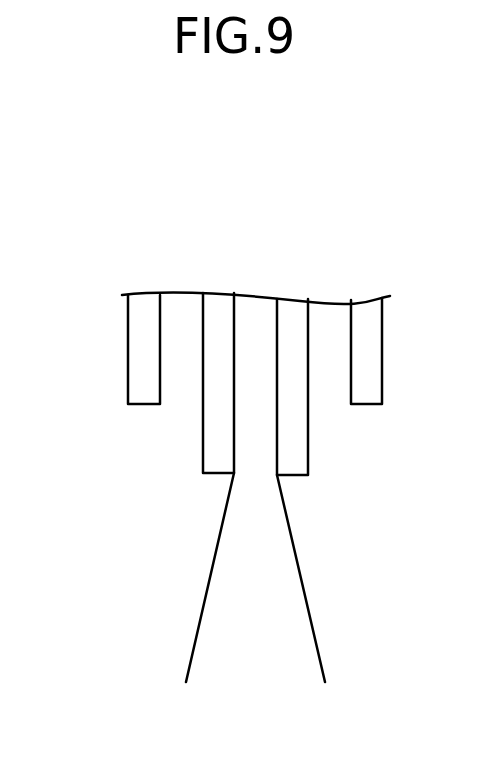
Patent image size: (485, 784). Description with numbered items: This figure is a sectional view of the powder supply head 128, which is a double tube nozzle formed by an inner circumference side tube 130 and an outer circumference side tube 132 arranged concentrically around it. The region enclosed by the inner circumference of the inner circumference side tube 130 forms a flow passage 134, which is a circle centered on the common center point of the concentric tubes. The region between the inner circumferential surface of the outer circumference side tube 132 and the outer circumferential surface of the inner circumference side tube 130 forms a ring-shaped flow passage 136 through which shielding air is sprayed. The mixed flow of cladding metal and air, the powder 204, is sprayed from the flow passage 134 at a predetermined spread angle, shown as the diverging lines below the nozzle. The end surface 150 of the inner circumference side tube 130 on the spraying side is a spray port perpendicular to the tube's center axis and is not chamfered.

The powder supply head 128 is at (121, 214).
The inner circumference side tube 130 is at (293, 462).
The outer circumference side tube 132 is at (145, 393).
The flow passage 134 is at (256, 310).
The flow passage 136 is at (175, 310).
The end surface 150 is at (228, 478).
The mixed flow (powder) 204 is at (300, 578).